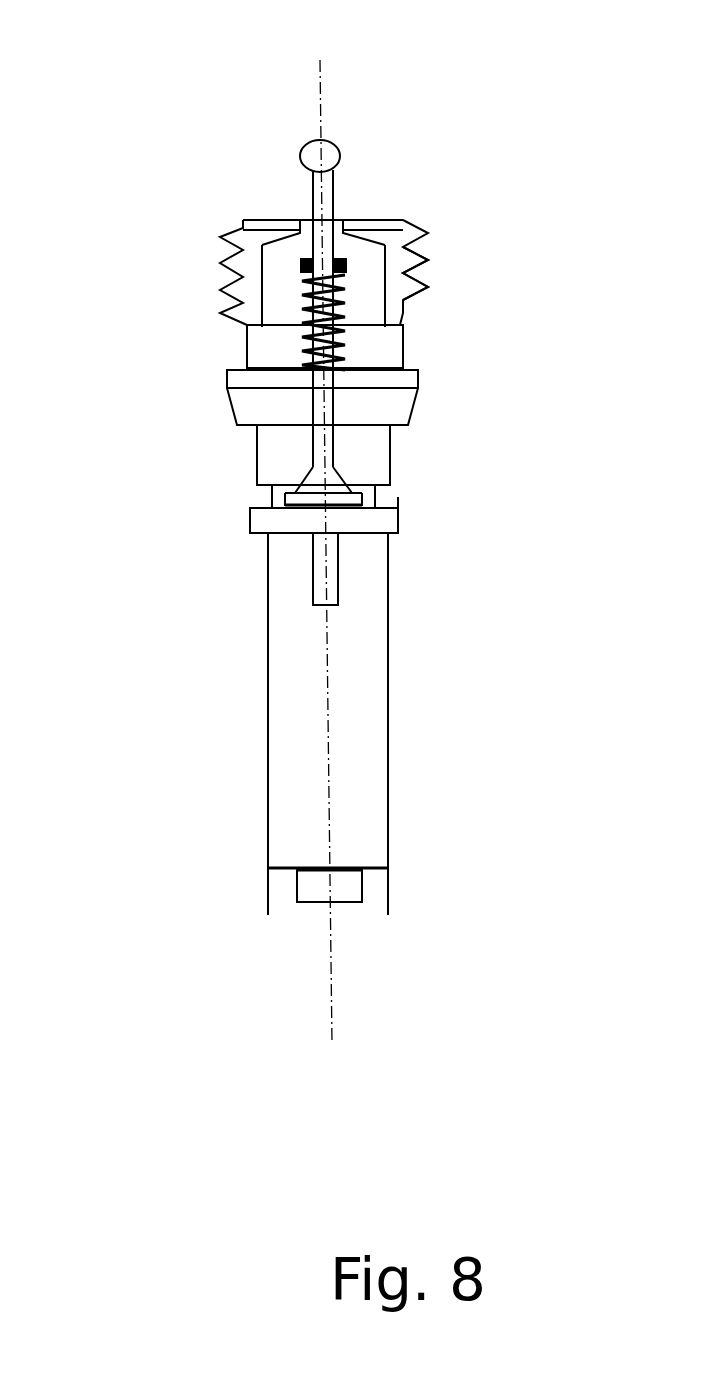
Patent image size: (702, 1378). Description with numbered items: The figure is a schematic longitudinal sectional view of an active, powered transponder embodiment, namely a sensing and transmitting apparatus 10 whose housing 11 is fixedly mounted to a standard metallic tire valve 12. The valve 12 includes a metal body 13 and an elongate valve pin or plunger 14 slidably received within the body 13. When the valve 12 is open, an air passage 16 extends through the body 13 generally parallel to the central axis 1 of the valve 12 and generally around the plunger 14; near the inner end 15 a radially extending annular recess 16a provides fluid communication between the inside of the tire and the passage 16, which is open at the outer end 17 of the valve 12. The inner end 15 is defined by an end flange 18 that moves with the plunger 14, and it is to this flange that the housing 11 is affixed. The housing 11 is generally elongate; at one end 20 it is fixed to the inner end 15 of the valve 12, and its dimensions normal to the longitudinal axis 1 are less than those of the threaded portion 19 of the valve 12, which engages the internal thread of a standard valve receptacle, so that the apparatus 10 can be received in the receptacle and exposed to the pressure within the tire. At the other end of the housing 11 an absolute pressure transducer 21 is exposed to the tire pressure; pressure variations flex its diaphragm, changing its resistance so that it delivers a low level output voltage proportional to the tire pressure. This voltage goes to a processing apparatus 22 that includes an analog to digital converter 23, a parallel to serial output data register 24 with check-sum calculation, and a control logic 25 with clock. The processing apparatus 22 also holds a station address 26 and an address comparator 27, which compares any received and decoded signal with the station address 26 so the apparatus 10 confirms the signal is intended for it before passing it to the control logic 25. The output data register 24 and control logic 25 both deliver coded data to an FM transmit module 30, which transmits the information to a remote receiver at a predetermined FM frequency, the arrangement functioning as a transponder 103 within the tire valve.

The central axis 1 is at (322, 58).
The sensing and transmitting apparatus 10 is at (157, 613).
The housing 11 is at (261, 662).
The tire valve 12 is at (222, 383).
The metal body 13 is at (273, 340).
The valve pin or plunger 14 is at (311, 184).
The inner end 15 is at (253, 548).
The air passage 16 is at (343, 218).
The annular recess 16a is at (252, 493).
The outer end 17 is at (455, 237).
The end flange 18 is at (400, 522).
The threaded portion 19 is at (437, 277).
The housing end 20 is at (392, 577).
The absolute pressure transducer 21 is at (363, 893).
The processing apparatus 22 is at (303, 802).
The analog to digital converter 23 is at (328, 845).
The parallel to serial output data register 24 is at (327, 809).
The control logic 25 is at (327, 730).
The station address 26 is at (317, 665).
The address comparator 27 is at (340, 665).
The FM transmit module 30 is at (307, 573).
The surface acoustic wave transponder 103 is at (392, 790).